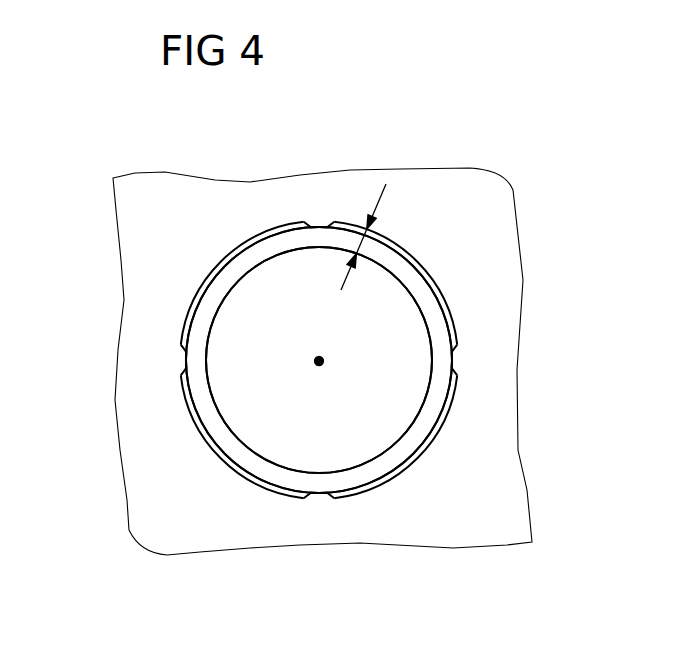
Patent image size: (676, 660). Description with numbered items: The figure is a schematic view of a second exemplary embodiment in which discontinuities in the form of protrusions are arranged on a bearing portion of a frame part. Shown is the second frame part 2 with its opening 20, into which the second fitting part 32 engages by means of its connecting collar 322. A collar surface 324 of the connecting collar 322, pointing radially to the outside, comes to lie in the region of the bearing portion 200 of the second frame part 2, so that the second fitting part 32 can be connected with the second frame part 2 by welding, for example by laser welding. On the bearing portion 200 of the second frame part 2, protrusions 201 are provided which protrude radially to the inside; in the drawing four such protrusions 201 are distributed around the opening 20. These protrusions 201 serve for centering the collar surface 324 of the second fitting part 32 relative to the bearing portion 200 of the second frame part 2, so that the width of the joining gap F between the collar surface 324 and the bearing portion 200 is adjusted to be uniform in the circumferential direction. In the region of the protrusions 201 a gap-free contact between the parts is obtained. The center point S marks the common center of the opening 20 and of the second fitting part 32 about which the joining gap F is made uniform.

The second frame part 2 is at (513, 488).
The opening 20 is at (376, 488).
The bearing portion 200 is at (408, 270).
The protrusions 201 is at (317, 222).
The second fitting part 32 is at (392, 415).
The connecting collar 322 is at (266, 470).
The collar surface 324 is at (220, 452).
The center point S is at (327, 357).
The joining gap F is at (368, 233).